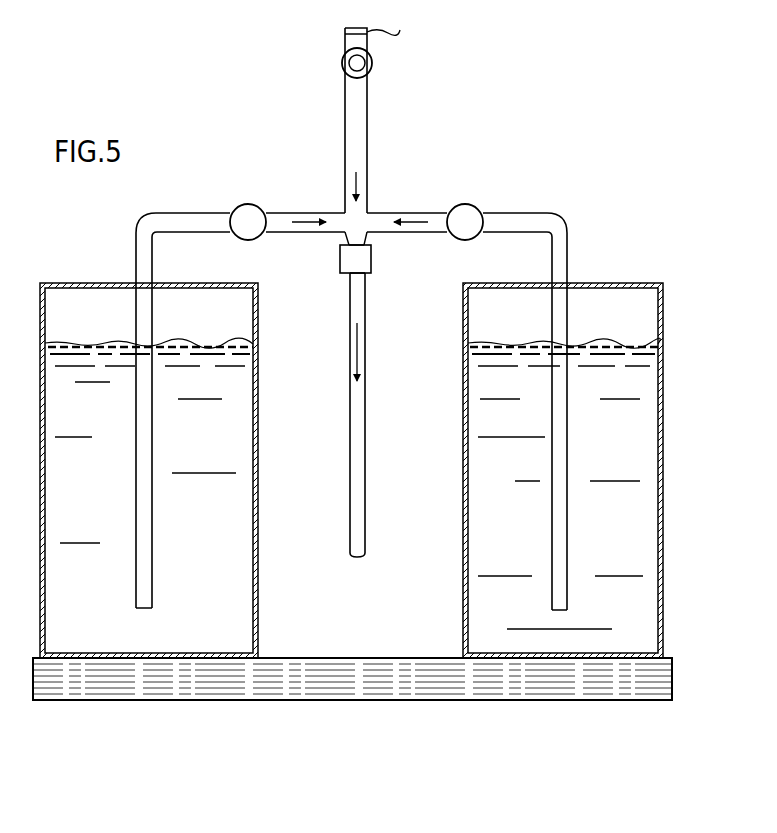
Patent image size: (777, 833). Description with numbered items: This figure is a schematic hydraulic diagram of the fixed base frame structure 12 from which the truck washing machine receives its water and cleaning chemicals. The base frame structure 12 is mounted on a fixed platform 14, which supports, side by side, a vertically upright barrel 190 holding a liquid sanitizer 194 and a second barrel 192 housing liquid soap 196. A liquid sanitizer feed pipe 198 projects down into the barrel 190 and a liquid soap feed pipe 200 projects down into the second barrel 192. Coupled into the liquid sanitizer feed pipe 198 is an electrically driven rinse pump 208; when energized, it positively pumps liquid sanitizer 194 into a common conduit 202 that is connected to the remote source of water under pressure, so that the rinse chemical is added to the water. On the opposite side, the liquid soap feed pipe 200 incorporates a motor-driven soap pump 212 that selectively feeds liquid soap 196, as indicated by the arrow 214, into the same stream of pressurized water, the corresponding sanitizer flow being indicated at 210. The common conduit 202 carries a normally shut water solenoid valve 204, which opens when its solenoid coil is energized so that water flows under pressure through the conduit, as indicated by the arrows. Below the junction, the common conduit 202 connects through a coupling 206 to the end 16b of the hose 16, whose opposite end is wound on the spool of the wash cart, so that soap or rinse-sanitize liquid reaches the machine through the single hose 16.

The base frame structure 12 is at (448, 133).
The fixed platform 14 is at (655, 677).
The hose 16 is at (365, 389).
The end of hose 16b is at (365, 280).
The barrel 190 is at (257, 456).
The second barrel 192 is at (462, 443).
The liquid sanitizer 194 is at (250, 516).
The liquid soap 196 is at (485, 490).
The liquid sanitizer feed pipe 198 is at (152, 328).
The liquid soap feed pipe 200 is at (567, 331).
The common conduit 202 is at (355, 128).
The water solenoid valve 204 is at (347, 41).
The coupling 206 is at (371, 262).
The rinse pump 208 is at (256, 204).
The first conduit 210 is at (322, 210).
The soap pump 212 is at (471, 204).
The arrow 214 is at (428, 210).